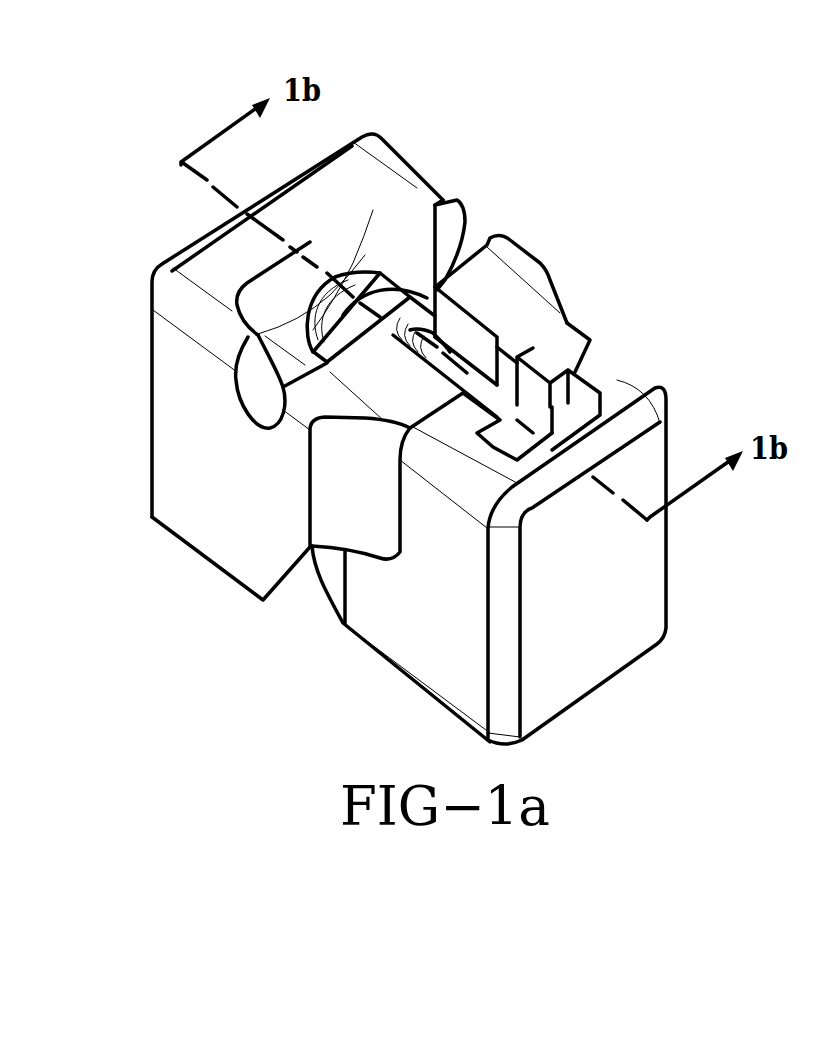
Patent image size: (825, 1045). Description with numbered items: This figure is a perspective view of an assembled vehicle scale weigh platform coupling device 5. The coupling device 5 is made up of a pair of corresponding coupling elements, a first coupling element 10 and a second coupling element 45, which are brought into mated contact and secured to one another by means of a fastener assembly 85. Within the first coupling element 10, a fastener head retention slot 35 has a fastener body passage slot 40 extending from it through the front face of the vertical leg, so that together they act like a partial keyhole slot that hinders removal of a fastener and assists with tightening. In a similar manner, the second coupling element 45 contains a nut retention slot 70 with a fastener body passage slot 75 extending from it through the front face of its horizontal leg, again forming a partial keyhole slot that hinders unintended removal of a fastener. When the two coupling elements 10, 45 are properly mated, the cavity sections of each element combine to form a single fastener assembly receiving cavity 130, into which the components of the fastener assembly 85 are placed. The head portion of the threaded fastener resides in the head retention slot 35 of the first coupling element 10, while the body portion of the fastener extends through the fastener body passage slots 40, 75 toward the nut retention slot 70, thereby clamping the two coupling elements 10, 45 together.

The vehicle scale weigh platform coupling device 5 is at (638, 180).
The first coupling element 10 is at (603, 699).
The fastener head retention slot 35 is at (590, 400).
The fastener body passage slot 40 is at (523, 390).
The second coupling element 45 is at (183, 556).
The nut retention slot 70 is at (403, 223).
The fastener body passage slot 75 is at (477, 335).
The fastener assembly 85 is at (478, 353).
The fastener assembly receiving cavity 130 is at (452, 300).